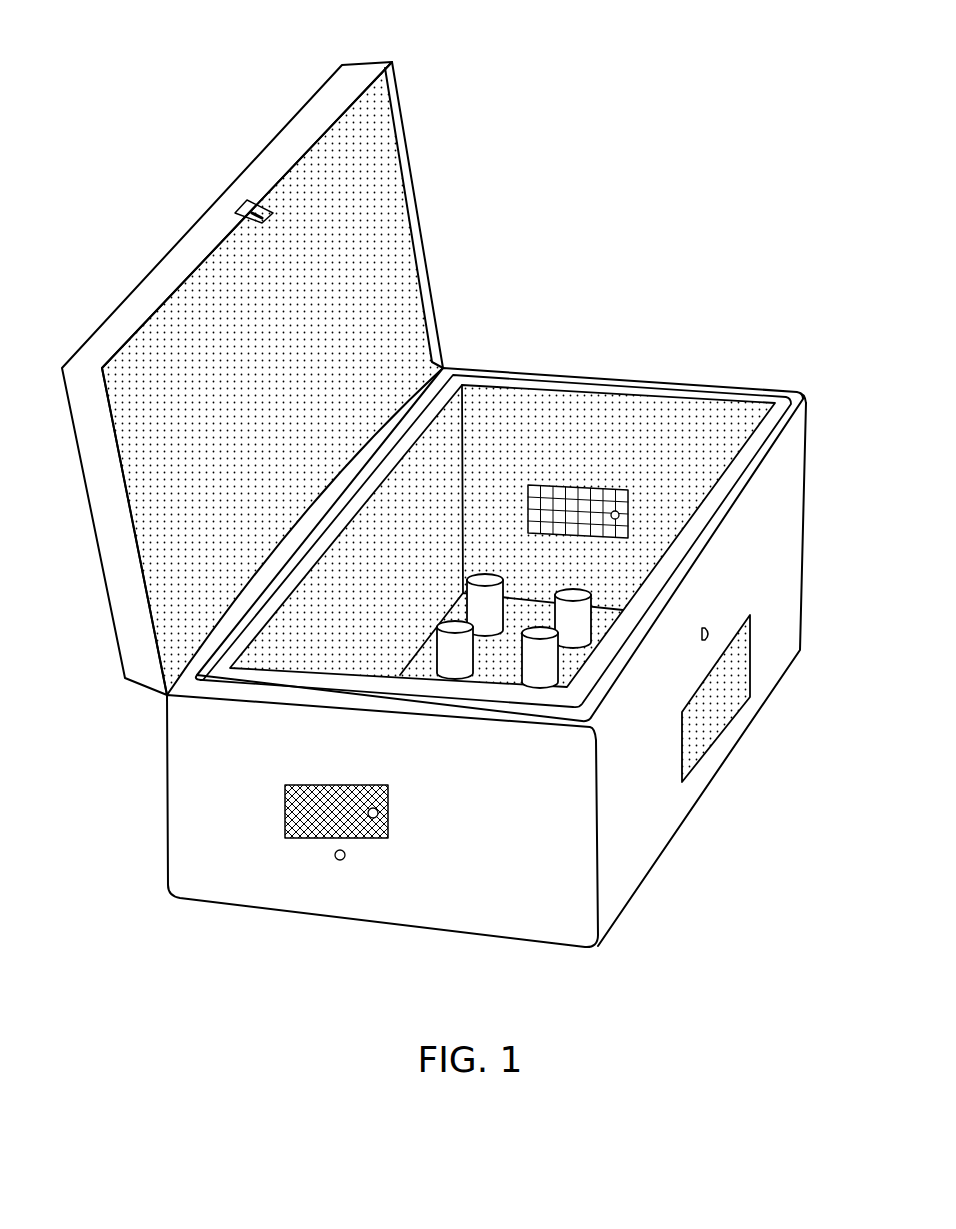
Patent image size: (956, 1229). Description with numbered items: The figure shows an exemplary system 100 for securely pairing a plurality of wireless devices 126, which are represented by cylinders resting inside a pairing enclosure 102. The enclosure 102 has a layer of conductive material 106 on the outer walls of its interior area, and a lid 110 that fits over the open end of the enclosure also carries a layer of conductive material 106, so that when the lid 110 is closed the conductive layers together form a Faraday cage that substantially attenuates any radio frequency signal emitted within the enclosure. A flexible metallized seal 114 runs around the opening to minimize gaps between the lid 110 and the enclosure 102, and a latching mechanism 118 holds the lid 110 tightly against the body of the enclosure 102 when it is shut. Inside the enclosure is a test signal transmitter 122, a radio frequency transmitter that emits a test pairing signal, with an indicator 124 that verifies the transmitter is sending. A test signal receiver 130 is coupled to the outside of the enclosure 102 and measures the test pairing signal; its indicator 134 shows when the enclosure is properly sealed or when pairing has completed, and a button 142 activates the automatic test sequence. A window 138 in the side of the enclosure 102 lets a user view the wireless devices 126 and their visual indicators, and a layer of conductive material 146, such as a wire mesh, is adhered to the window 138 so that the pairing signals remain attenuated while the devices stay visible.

The system for securely pairing wireless devices 100 is at (291, 62).
The pairing enclosure 102 is at (167, 780).
The layer of conductive material 106 is at (377, 160).
The lid 110 is at (135, 603).
The flexible metallized seal 114 is at (518, 708).
The latching mechanism 118 is at (240, 210).
The test signal transmitter 122 is at (565, 486).
The indicator 124 is at (615, 511).
The wireless devices 126 is at (437, 623).
The test signal receiver 130 is at (307, 836).
The indicator 134 is at (378, 816).
The window 138 is at (723, 713).
The button 142 is at (345, 858).
The layer of conductive material 146 is at (732, 672).